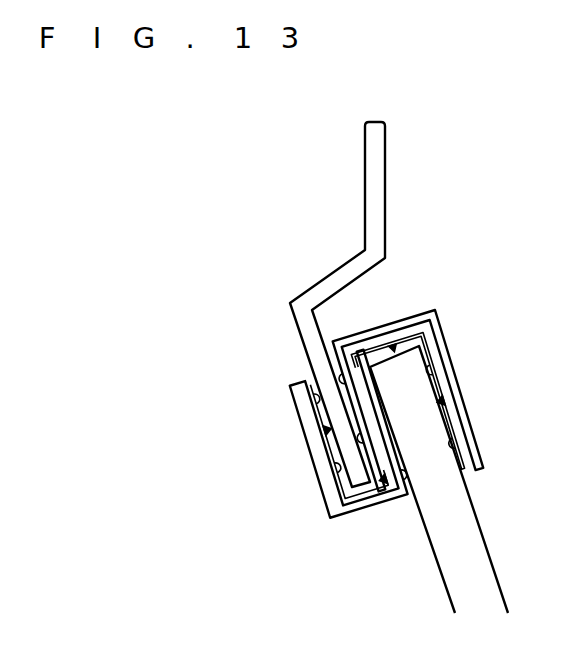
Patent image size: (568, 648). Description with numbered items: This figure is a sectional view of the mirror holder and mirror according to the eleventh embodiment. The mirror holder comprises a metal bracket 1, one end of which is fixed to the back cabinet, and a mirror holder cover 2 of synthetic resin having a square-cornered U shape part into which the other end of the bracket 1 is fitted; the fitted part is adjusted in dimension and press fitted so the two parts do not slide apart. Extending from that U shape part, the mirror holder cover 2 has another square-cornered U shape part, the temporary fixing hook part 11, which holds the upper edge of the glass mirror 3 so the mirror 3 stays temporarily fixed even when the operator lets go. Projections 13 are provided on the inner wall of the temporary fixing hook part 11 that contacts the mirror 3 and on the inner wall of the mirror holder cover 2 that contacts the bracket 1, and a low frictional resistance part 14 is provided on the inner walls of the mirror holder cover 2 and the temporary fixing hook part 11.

The bracket 1 is at (377, 161).
The mirror holder cover 2 is at (330, 516).
The mirror 3 is at (460, 538).
The temporary fixing hook part 11 is at (435, 330).
The projections 13 is at (433, 372).
The low frictional resistance part 14 is at (453, 408).